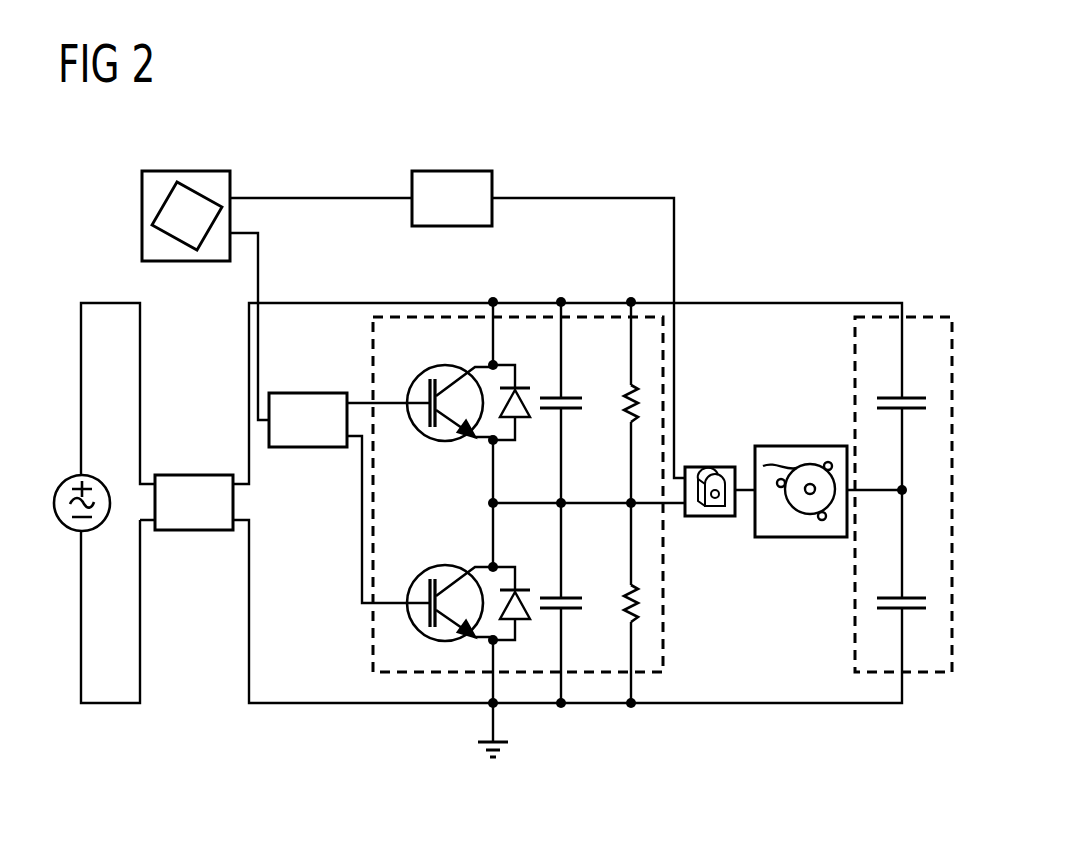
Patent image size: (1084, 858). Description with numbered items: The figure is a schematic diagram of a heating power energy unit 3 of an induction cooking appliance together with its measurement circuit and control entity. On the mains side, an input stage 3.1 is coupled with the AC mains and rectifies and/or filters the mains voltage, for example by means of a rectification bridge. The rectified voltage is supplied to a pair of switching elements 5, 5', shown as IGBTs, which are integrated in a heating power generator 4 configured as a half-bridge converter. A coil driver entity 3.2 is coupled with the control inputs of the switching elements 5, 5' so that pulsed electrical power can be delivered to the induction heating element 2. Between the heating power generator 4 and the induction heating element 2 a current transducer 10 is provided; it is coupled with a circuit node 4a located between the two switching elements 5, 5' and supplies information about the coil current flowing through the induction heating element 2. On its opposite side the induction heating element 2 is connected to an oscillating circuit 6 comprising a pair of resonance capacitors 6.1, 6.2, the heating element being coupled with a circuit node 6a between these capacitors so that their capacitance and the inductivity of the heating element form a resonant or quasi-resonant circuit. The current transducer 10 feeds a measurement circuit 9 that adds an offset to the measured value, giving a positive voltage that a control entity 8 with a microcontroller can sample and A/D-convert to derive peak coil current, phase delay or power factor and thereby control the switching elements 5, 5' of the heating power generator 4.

The induction heating element 2 is at (801, 446).
The heating power energy unit 3 is at (845, 266).
The input stage 3.1 is at (196, 475).
The coil driver entity 3.2 is at (310, 393).
The heating power generator 4 is at (663, 604).
The circuit node 4a is at (493, 503).
The switching element 5 is at (437, 379).
The switching element 5' is at (437, 579).
The oscillating circuit 6 is at (935, 317).
The resonance capacitor 6.1 is at (914, 398).
The resonance capacitor 6.2 is at (914, 598).
The circuit node 6a is at (899, 488).
The control entity 8 is at (186, 171).
The measurement circuit 9 is at (453, 171).
The current transducer 10 is at (711, 467).